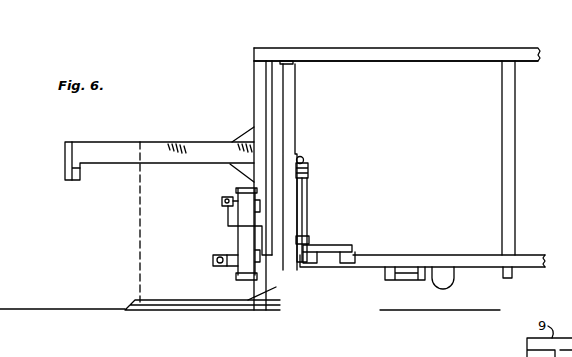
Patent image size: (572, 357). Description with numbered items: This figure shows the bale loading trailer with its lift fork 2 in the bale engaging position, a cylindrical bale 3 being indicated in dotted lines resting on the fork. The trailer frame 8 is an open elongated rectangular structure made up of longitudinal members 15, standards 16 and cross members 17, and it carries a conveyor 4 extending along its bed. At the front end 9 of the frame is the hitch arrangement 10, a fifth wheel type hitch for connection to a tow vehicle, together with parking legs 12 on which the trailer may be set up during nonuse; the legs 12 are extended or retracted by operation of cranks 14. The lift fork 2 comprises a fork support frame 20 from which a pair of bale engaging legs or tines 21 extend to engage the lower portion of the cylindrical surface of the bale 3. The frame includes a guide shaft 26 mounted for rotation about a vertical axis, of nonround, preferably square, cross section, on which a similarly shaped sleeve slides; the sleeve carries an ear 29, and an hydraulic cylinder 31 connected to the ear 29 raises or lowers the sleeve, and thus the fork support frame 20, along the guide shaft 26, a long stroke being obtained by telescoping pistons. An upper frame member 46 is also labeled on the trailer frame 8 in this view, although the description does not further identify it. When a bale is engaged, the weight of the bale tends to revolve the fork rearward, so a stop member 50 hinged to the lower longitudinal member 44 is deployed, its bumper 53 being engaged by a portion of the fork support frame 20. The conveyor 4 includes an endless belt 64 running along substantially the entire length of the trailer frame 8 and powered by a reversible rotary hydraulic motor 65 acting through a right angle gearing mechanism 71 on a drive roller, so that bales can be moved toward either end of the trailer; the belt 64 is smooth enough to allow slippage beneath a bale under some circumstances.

The lift fork 2 is at (130, 303).
The cylindrical bale 3 is at (138, 213).
The conveyor 4 is at (212, 260).
The trailer frame 8 is at (416, 44).
The front end 9 is at (258, 47).
The hitch arrangement 10 is at (160, 141).
The legs 12 is at (240, 281).
The cranks 14 is at (228, 224).
The longitudinal members 15 is at (526, 258).
The standards 16 is at (254, 90).
The cross members 17 is at (512, 274).
The fork support frame 20 is at (306, 193).
The bale engaging legs or tines 21 is at (180, 300).
The guide shaft 26 is at (290, 118).
The ear 29 is at (303, 158).
The hydraulic cylinder 31 is at (306, 207).
The lower longitudinal member 44 is at (487, 262).
The beam underside 46 is at (332, 62).
The stop member 50 is at (338, 246).
The bumper 53 is at (304, 238).
The endless belt 64 is at (455, 254).
The motor 65 is at (403, 280).
The right angle gearing mechanism 71 is at (450, 280).